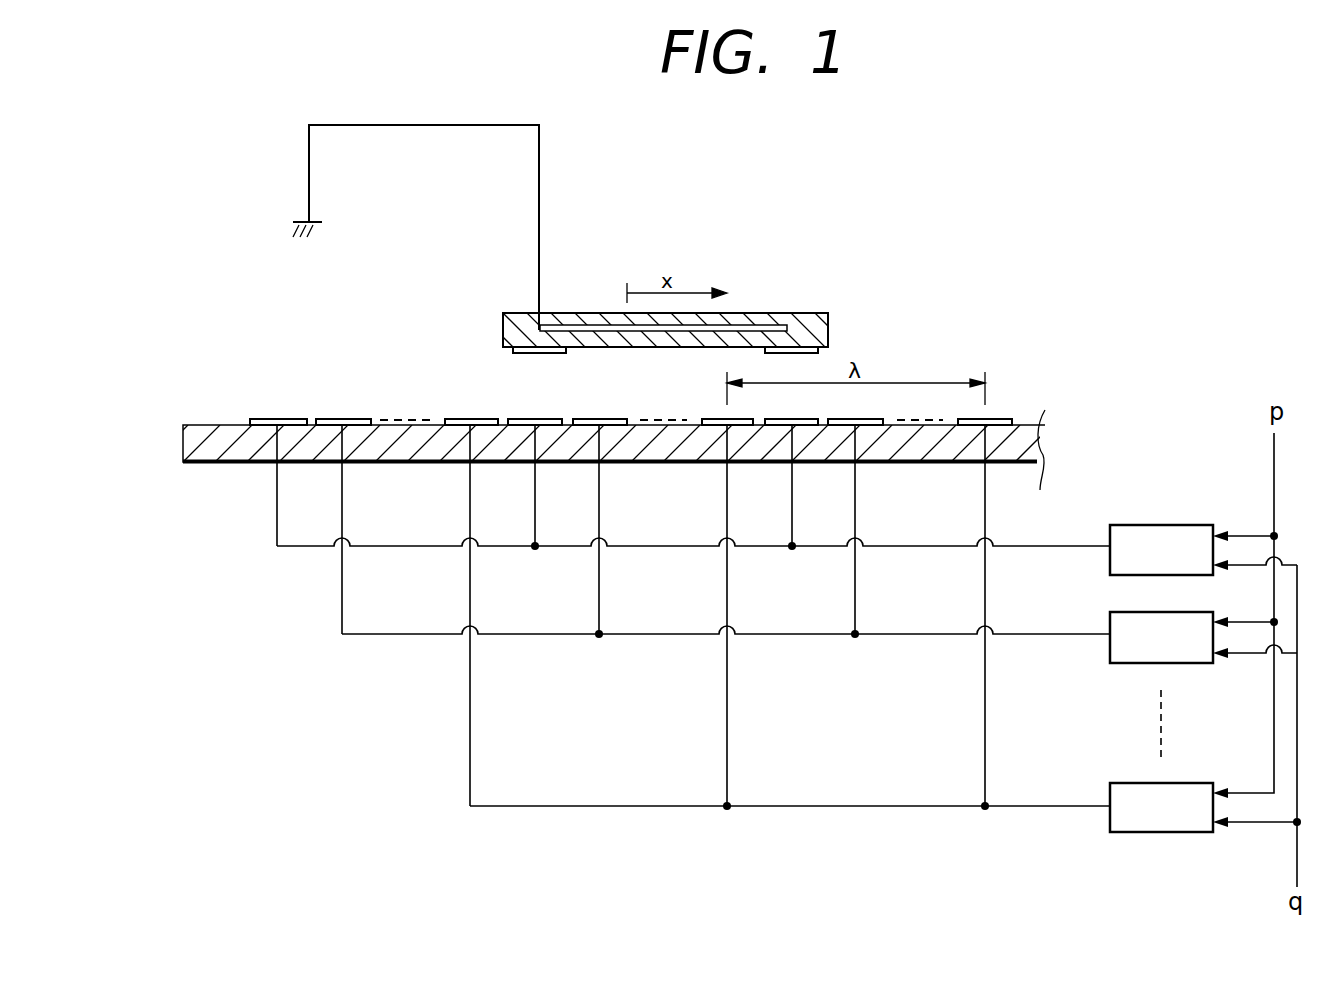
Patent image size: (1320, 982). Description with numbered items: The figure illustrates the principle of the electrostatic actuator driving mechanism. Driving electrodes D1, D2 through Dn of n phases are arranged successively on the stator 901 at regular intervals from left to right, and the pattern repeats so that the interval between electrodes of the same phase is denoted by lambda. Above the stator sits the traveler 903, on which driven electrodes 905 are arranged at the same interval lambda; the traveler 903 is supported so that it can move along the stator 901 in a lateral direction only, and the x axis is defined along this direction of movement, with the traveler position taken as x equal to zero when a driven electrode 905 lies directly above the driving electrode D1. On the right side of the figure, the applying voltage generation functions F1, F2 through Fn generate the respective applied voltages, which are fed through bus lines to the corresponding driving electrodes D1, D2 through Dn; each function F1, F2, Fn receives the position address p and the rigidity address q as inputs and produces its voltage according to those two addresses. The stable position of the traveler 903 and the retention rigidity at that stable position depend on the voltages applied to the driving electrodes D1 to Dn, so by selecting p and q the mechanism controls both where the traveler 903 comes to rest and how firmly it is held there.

The stator 901 is at (209, 464).
The traveler 903 is at (764, 313).
The driven electrodes 905 is at (524, 350).
The driving electrode D1 is at (257, 426).
The driving electrode D2 is at (321, 426).
The driving electrode Dn is at (448, 426).
The applying voltage generation function F1 is at (1110, 534).
The applying voltage generation function F2 is at (1110, 621).
The applying voltage generation function Fn is at (1110, 792).